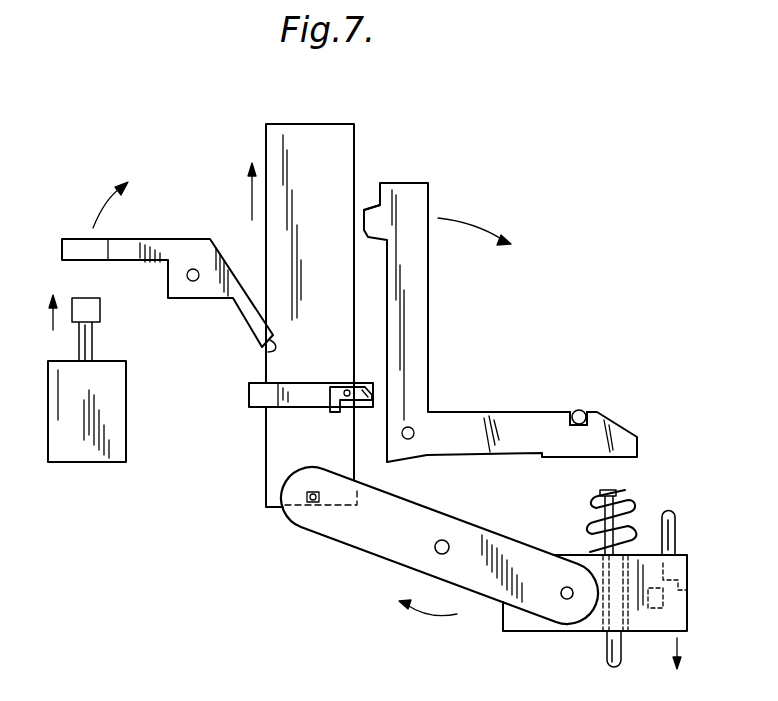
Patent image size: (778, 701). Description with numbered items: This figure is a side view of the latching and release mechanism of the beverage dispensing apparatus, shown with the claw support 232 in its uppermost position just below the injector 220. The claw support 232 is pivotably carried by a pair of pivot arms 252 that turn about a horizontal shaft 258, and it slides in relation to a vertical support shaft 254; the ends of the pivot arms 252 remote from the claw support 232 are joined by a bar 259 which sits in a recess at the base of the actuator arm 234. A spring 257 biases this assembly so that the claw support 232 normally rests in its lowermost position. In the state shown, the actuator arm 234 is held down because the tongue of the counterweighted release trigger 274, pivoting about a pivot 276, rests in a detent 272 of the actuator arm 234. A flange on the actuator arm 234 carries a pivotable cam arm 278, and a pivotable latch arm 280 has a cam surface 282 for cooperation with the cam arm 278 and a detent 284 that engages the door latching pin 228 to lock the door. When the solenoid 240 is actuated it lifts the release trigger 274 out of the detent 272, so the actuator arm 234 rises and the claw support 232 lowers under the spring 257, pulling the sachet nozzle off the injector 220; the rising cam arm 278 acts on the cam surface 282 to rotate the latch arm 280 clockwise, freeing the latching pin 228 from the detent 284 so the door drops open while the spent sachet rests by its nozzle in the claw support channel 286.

The injector 220 is at (667, 508).
The latching pin 228 is at (584, 410).
The claw support 232 is at (523, 621).
The actuator arm 234 is at (325, 145).
The solenoid 240 is at (122, 418).
The pivot arms 252 is at (357, 541).
The vertical support shaft 254 is at (630, 487).
The spring 257 is at (596, 548).
The horizontal shaft 258 is at (447, 540).
The bar 259 is at (313, 504).
The detent 272 is at (266, 352).
The release trigger 274 is at (151, 246).
The pivot 276 is at (193, 281).
The cam arm 278 is at (336, 390).
The latch arm 280 is at (538, 448).
The cam surface 282 is at (368, 210).
The detent 284 is at (571, 420).
The claw support channel 286 is at (665, 603).